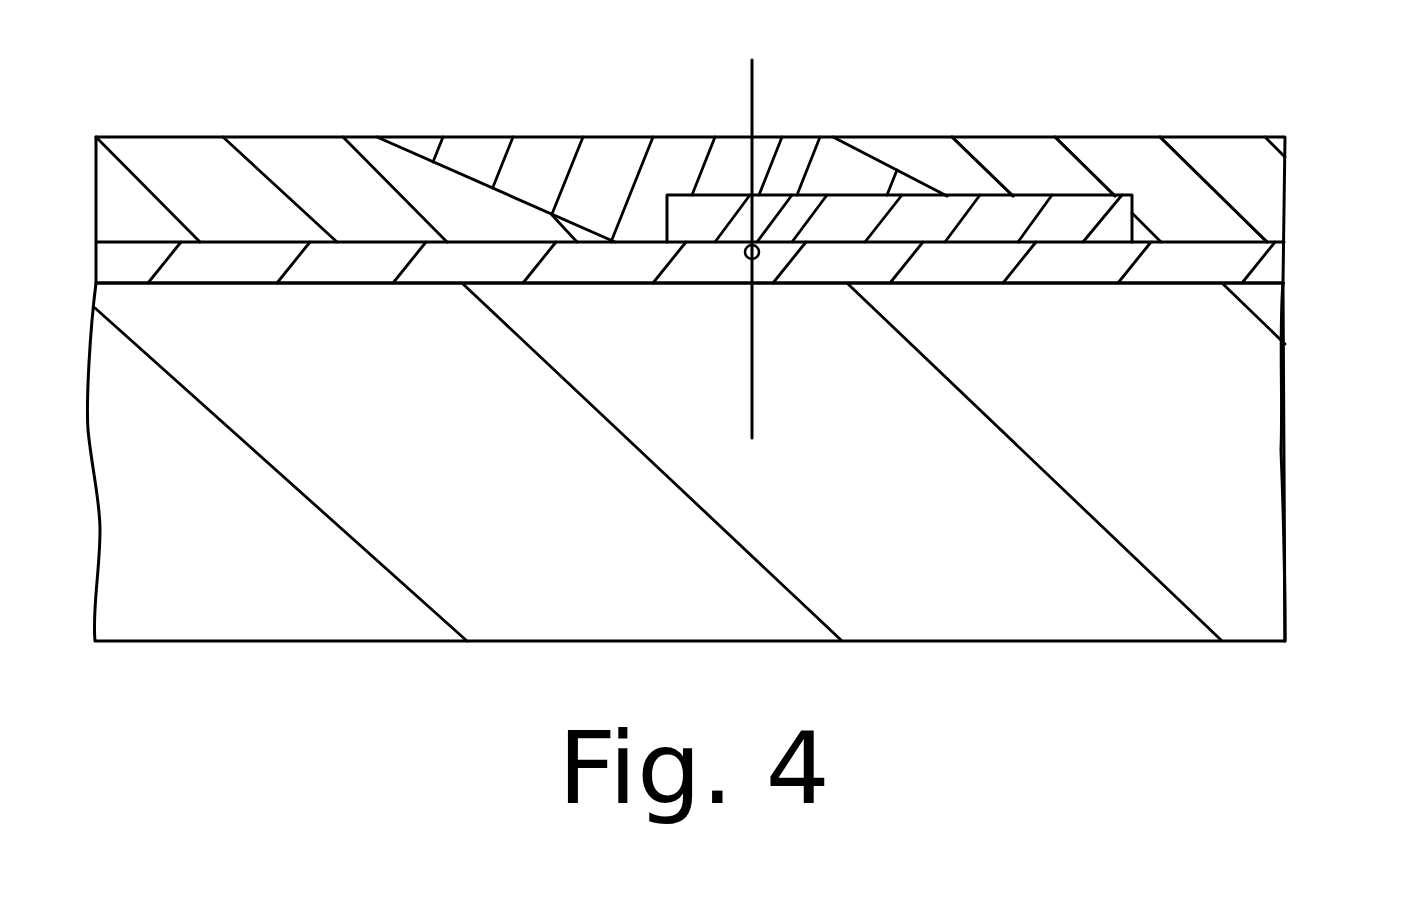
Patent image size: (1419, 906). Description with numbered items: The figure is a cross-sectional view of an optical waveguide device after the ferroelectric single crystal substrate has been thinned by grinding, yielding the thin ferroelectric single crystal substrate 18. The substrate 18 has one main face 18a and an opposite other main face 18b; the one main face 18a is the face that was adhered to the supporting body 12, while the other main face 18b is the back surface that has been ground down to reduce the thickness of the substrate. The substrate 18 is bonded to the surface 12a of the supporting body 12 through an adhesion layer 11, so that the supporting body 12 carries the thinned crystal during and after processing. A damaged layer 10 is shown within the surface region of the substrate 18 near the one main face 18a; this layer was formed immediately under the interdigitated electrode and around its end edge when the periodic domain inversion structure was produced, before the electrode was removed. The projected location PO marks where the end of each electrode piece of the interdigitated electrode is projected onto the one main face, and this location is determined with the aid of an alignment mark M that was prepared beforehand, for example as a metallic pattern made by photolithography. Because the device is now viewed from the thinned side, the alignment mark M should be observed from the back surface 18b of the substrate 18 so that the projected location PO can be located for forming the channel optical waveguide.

The damaged layer 10 is at (1077, 220).
The adhesion layer 11 is at (1143, 284).
The supporting body 12 is at (1258, 467).
The surface of the supporting body 12a is at (510, 272).
The thin ferroelectric single crystal substrate 18 is at (1267, 185).
The one main face 18a is at (1267, 247).
The other main face 18b is at (1207, 137).
The projected location PO is at (822, 138).
The alignment mark M is at (745, 259).